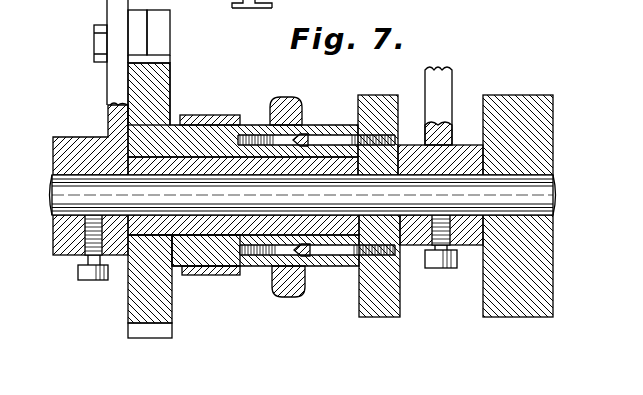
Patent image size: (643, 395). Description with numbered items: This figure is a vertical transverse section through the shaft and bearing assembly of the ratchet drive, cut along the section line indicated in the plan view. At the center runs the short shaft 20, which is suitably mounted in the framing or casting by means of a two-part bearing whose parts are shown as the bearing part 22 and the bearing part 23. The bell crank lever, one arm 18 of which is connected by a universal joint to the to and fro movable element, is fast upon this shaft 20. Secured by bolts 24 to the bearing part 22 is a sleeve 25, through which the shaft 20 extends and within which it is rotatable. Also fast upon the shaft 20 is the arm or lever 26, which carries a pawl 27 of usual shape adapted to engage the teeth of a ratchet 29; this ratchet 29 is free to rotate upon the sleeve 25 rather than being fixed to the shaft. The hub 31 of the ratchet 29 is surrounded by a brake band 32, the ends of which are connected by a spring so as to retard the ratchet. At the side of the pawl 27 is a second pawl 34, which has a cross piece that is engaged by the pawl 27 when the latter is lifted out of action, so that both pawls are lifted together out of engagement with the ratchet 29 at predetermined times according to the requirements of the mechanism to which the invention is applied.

The arm 18 is at (442, 85).
The short shaft 20 is at (540, 187).
The bearing part 22 is at (386, 302).
The bearing part 23 is at (510, 300).
The bolts 24 is at (333, 135).
The sleeve 25 is at (222, 236).
The arm or lever 26 is at (116, 98).
The pawl 27 is at (137, 28).
The ratchet 29 is at (156, 82).
The hub 31 is at (203, 250).
The brake band 32 is at (208, 118).
The second pawl 34 is at (155, 41).